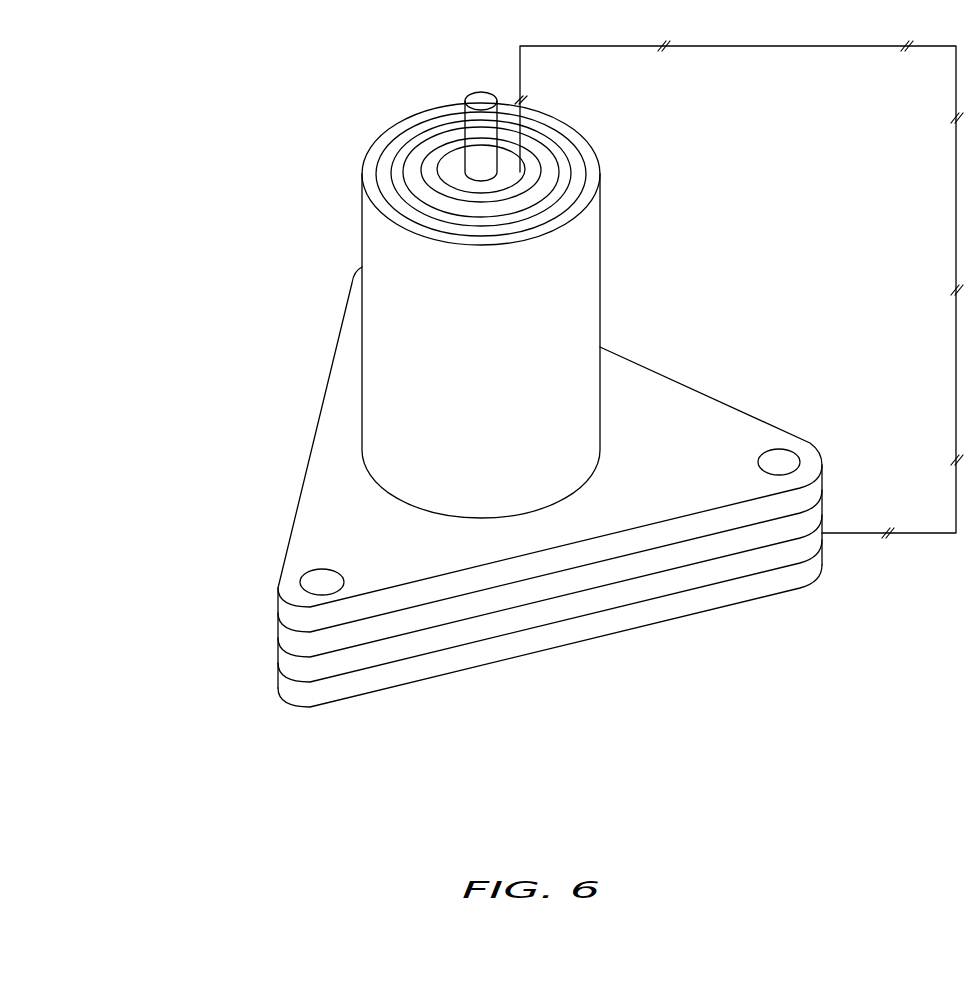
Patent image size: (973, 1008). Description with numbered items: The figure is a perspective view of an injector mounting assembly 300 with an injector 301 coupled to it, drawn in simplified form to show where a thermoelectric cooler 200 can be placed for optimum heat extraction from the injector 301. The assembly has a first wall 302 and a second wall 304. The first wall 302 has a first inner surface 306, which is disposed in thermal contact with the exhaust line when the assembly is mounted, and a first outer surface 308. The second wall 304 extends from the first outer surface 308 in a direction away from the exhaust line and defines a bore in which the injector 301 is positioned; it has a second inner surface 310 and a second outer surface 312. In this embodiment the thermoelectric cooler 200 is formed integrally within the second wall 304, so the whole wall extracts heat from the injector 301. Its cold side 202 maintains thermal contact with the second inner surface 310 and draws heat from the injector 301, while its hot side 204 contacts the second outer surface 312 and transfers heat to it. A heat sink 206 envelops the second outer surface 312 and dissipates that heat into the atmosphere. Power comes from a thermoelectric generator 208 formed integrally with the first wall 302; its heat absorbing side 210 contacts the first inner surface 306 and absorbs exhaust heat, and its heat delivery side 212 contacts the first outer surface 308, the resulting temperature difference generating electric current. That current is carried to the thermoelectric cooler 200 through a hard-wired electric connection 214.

The thermoelectric cooler 200 is at (405, 148).
The cold side 202 is at (418, 173).
The hot side 204 is at (443, 133).
The heat sink 206 is at (370, 187).
The thermoelectric generator 208 is at (848, 520).
The heat absorbing side 210 is at (800, 542).
The heat delivery side 212 is at (790, 523).
The electric connection 214 is at (956, 221).
The injector mounting assembly 300 is at (690, 120).
The injector 301 is at (450, 172).
The first wall 302 is at (202, 644).
The second wall 304 is at (590, 145).
The first inner surface 306 is at (762, 593).
The first outer surface 308 is at (708, 418).
The second inner surface 310 is at (515, 160).
The second outer surface 312 is at (582, 176).